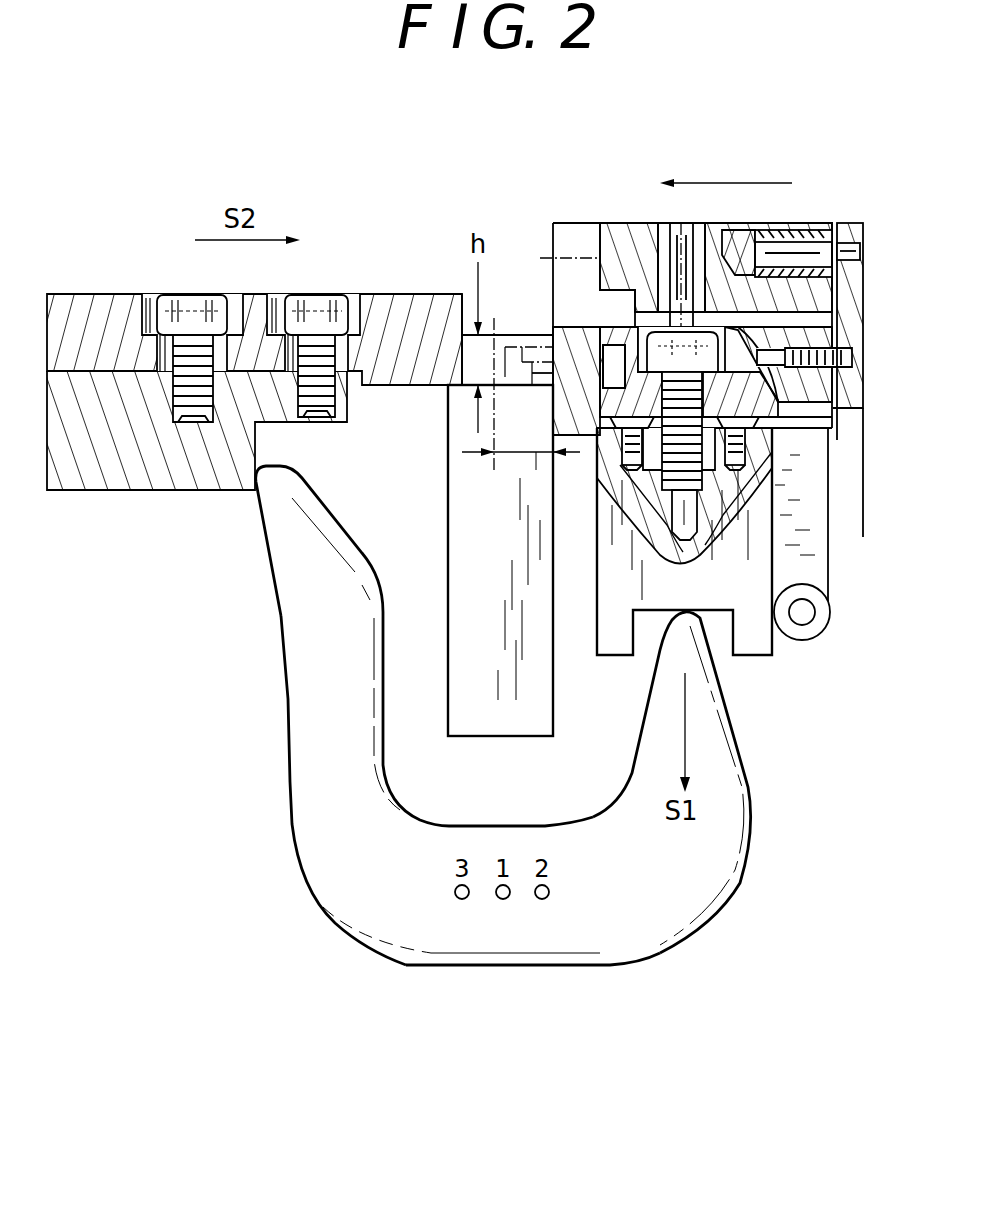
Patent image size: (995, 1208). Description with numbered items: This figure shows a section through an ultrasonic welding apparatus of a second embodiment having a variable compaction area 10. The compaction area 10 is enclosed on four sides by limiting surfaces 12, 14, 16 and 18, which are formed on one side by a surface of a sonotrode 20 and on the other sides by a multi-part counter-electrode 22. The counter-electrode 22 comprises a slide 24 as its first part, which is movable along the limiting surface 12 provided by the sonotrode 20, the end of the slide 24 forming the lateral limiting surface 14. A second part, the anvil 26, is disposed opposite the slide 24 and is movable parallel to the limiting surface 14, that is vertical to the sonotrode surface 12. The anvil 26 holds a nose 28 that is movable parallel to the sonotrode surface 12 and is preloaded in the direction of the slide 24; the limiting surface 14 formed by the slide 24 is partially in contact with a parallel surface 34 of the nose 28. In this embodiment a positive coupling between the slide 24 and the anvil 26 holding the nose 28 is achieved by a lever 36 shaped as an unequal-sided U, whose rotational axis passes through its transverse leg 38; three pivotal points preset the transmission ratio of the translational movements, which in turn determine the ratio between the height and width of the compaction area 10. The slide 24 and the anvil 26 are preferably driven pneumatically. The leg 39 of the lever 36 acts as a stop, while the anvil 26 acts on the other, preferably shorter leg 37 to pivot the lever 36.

The compaction area 10 is at (518, 352).
The limiting surface 12 is at (491, 336).
The limiting surface 14 is at (465, 292).
The limiting surface 16 is at (605, 326).
The limiting surface 18 is at (553, 452).
The sonotrode 20 is at (497, 736).
The multi-part counter-electrode 22 is at (808, 148).
The slide 24 is at (392, 292).
The anvil 26 is at (748, 593).
The nose 28 is at (614, 228).
The parallel surface 34 is at (553, 232).
The lever 36 is at (330, 766).
The leg 37 is at (718, 830).
The transverse leg 38 is at (614, 919).
The leg 39 is at (330, 632).